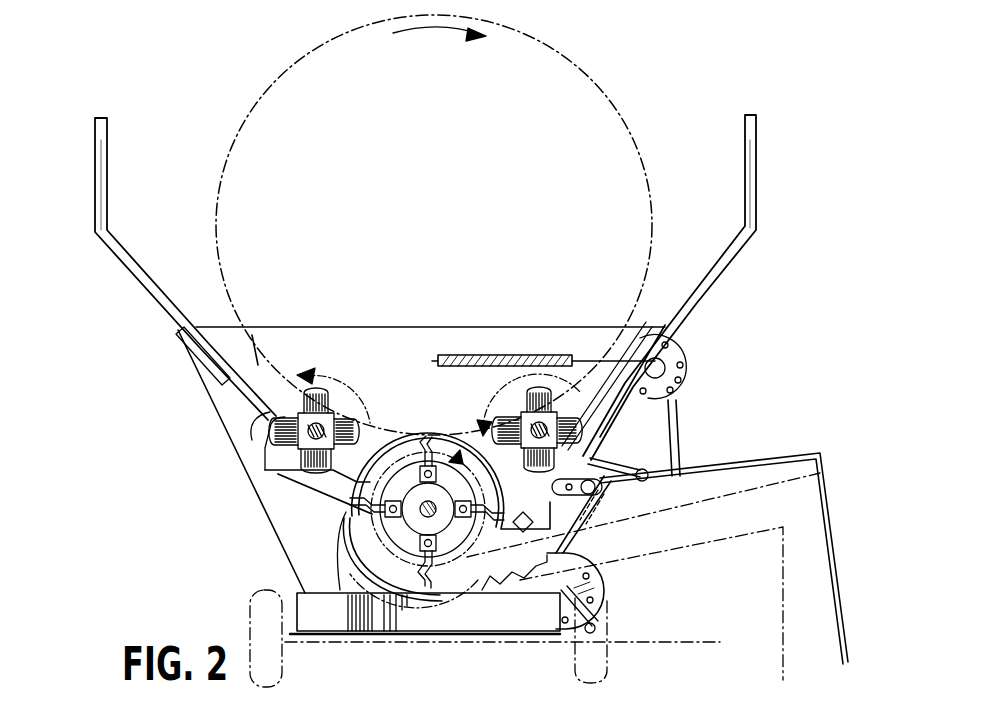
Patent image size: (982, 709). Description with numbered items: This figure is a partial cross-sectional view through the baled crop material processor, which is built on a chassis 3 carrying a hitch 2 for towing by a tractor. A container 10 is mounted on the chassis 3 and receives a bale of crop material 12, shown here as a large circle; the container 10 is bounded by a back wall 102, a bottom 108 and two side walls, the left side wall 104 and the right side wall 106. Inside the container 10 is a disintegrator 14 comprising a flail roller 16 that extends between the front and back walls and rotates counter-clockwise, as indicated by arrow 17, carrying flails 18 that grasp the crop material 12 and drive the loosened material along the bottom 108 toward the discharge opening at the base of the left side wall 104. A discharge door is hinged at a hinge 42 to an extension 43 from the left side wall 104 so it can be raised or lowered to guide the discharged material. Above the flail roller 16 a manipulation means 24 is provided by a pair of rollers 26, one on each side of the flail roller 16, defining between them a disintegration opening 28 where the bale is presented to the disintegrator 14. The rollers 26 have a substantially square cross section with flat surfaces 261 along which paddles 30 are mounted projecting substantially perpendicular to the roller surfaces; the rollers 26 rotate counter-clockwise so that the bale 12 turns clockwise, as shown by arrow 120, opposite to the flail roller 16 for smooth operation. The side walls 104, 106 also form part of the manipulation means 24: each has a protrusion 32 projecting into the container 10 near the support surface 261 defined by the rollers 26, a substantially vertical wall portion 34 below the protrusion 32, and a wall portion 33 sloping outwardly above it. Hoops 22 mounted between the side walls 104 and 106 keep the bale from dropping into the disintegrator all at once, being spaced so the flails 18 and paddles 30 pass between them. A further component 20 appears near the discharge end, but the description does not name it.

The hitch 2 is at (342, 383).
The chassis 3 is at (503, 611).
The container 10 is at (240, 448).
The crop material 12 is at (574, 56).
The disintegrator 14 is at (352, 595).
The flail roller 16 is at (465, 527).
The arrow 17 is at (586, 498).
The flails 18 is at (380, 548).
The cover 20 is at (593, 548).
The hoops 22 is at (358, 530).
The manipulation means 24 is at (253, 350).
The rollers 26 is at (270, 400).
The disintegration opening 28 is at (425, 412).
The paddles 30 is at (306, 393).
The protrusion 32 is at (265, 470).
The sloping wall portion 33 is at (134, 243).
The vertical wall portion 34 is at (275, 482).
The hinge 42 is at (660, 478).
The extension 43 is at (642, 475).
The back wall 102 is at (408, 588).
The left side wall 104 is at (754, 120).
The right side wall 106 is at (99, 138).
The bottom 108 is at (370, 585).
The arrow 120 is at (430, 30).
The flat surfaces 261 is at (267, 423).